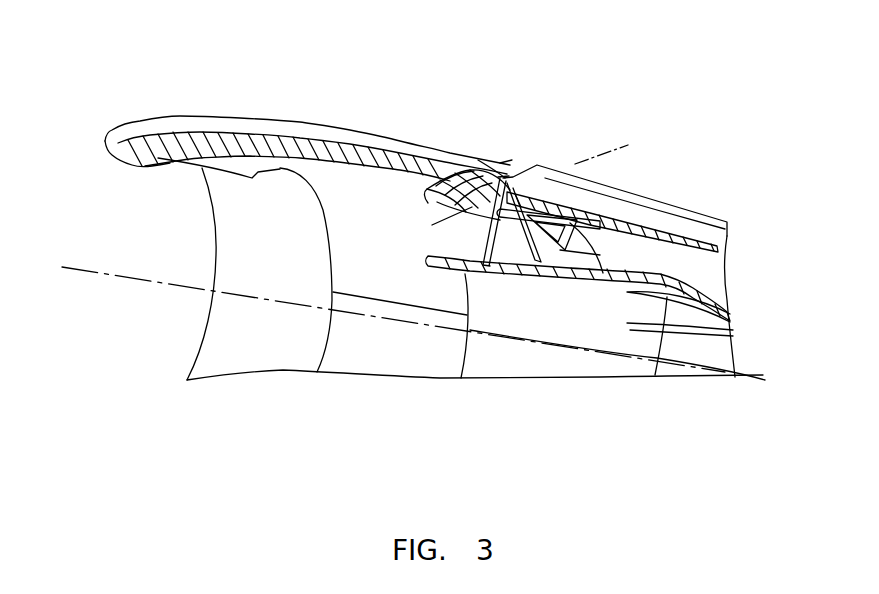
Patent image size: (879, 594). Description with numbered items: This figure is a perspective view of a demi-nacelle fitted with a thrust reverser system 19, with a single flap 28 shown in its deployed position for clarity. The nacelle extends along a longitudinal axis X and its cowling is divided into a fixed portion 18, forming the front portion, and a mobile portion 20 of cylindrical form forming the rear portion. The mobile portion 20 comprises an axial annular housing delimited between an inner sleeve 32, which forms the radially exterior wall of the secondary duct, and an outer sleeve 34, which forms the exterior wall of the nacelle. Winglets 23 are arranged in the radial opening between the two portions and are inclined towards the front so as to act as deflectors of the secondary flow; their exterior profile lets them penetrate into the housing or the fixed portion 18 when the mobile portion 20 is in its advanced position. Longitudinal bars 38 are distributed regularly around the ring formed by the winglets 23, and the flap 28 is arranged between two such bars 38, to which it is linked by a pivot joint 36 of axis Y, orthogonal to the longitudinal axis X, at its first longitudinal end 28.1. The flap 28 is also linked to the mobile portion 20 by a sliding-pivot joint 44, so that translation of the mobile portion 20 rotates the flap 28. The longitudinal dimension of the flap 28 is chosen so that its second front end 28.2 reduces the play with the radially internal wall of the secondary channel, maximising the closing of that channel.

The fixed portion 18 is at (302, 118).
The thrust reverser system 19 is at (507, 152).
The mobile portion 20 is at (620, 168).
The winglets 23 is at (442, 150).
The flap 28 is at (522, 249).
The first longitudinal end 28.1 is at (517, 172).
The second front end 28.2 is at (497, 279).
The inner sleeve 32 is at (560, 214).
The outer sleeve 34 is at (640, 224).
The pivot joint 36 is at (560, 188).
The longitudinal bars 38 is at (480, 155).
The sliding-pivot joint 44 is at (478, 223).
The longitudinal axis X is at (90, 272).
The axis of the pivot joint Y is at (603, 150).